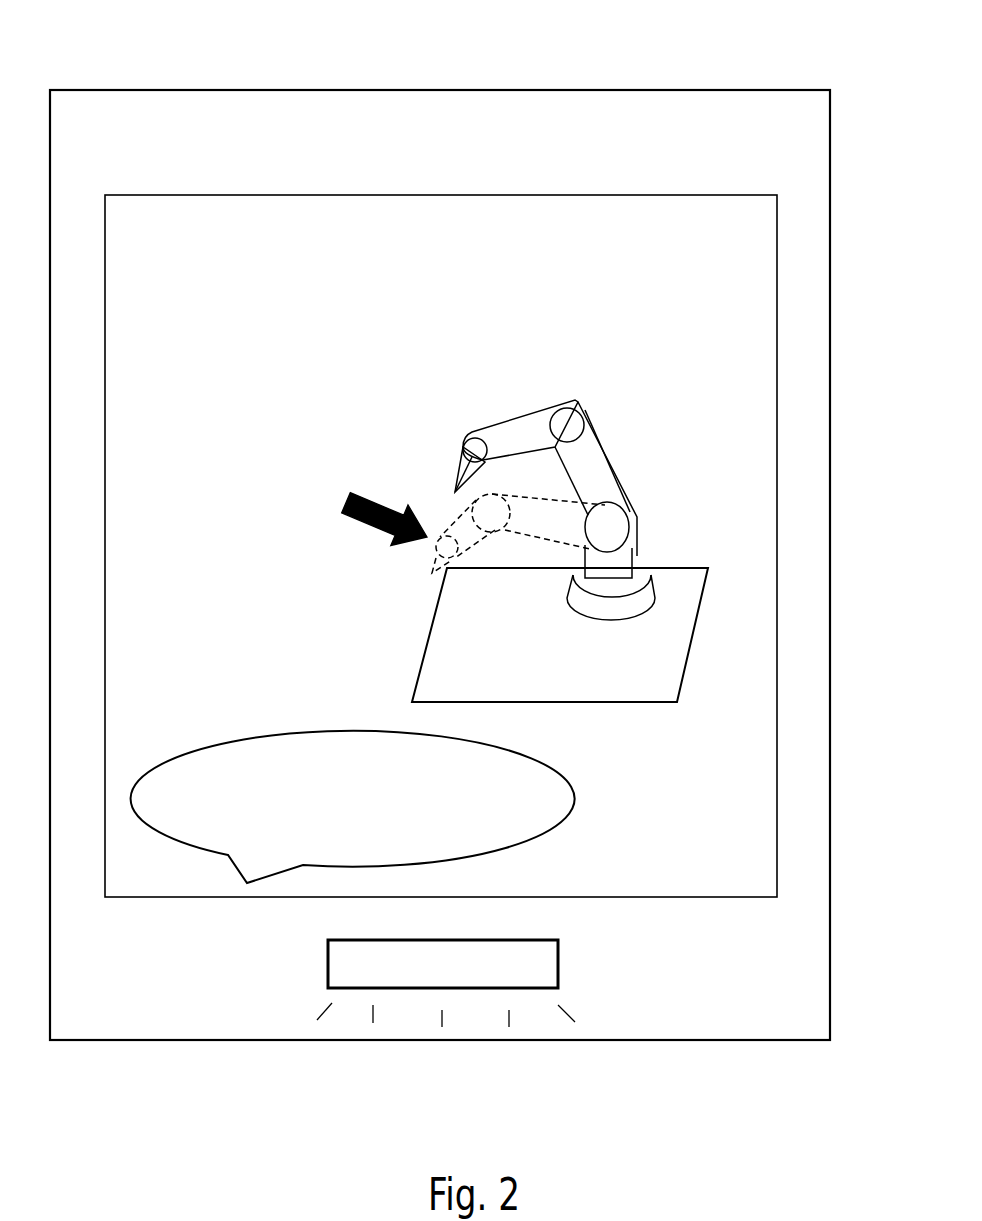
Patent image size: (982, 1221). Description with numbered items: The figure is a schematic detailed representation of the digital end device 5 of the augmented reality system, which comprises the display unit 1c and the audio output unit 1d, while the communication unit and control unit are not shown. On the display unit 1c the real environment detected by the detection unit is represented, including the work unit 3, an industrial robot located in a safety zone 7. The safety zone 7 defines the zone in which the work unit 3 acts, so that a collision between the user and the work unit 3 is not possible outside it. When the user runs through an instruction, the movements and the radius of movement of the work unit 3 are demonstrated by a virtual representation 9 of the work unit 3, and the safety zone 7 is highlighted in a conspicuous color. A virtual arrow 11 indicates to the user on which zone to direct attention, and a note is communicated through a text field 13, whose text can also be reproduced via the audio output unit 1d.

The digital end device 5 is at (452, 90).
The display unit 1c is at (777, 392).
The work unit 3 is at (575, 400).
The virtual representation of the work unit 9 is at (452, 522).
The virtual arrow 11 is at (359, 522).
The safety zone 7 is at (448, 655).
The text field 13 is at (540, 770).
The audio output unit 1d is at (328, 958).